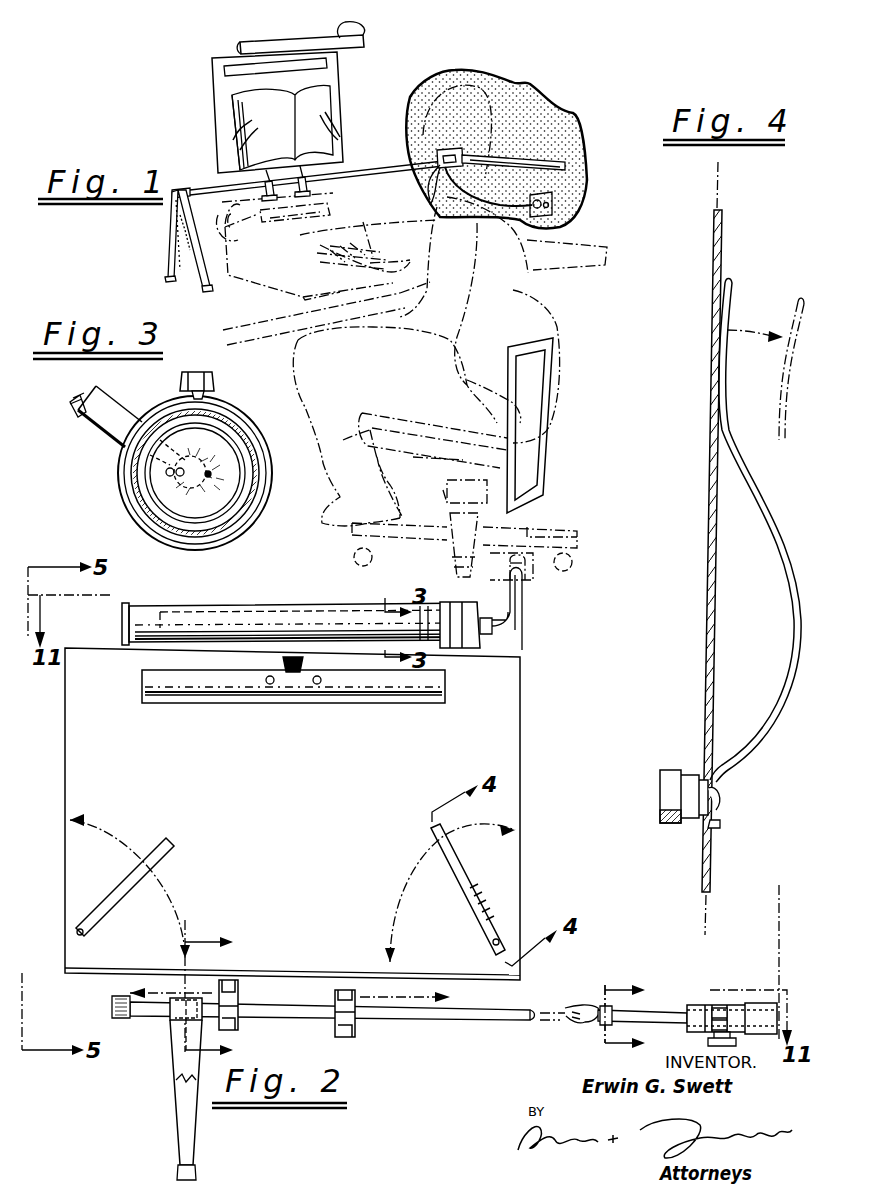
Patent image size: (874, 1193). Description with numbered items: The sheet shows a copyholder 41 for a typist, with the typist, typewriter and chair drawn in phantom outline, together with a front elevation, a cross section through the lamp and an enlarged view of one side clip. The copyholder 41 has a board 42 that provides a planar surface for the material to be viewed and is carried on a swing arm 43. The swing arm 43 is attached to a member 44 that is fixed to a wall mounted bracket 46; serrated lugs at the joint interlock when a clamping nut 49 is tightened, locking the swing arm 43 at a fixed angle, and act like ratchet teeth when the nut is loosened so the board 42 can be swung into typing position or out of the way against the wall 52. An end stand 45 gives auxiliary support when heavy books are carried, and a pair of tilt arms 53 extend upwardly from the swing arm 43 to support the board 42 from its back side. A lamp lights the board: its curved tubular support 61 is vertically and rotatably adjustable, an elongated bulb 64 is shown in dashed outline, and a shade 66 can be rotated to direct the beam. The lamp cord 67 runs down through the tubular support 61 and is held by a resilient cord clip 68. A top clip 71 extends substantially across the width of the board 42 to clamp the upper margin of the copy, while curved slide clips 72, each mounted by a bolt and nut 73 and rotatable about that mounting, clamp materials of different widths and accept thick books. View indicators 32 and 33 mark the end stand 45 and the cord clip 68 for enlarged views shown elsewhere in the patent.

In FIG. 1, the copyholder 41 is at (203, 80).
In FIG. 1, the board 42 is at (338, 75).
In FIG. 2, the board 42 is at (512, 707).
In FIG. 4, the board 42 is at (706, 633).
In FIG. 1, the swing arm 43 is at (335, 172).
In FIG. 2, the swing arm 43 is at (590, 1040).
In FIG. 1, the member 44 is at (462, 158).
In FIG. 2, the member 44 is at (740, 1012).
In FIG. 1, the end stand 45 is at (183, 218).
In FIG. 2, the end stand 45 is at (174, 1103).
In FIG. 1, the wall mounted bracket 46 is at (548, 160).
In FIG. 2, the clamping nut 49 is at (736, 1044).
In FIG. 1, the wall 52 is at (478, 82).
In FIG. 2, the tilt arms 53 is at (242, 984).
In FIG. 3, the curved tubular support 61 is at (108, 439).
In FIG. 2, the curved tubular support 61 is at (523, 651).
In FIG. 3, the elongated bulb 64 is at (148, 479).
In FIG. 2, the elongated bulb 64 is at (255, 616).
In FIG. 3, the shade 66 is at (240, 423).
In FIG. 1, the cord 67 is at (415, 175).
In FIG. 3, the cord 67 is at (78, 409).
In FIG. 1, the resilient cord clip 68 is at (468, 192).
In FIG. 2, the top clip 71 is at (150, 680).
In FIG. 2, the slide clips 72 is at (164, 840).
In FIG. 4, the slide clips 72 is at (795, 599).
In FIG. 4, the bolt and nut 73 is at (688, 792).
In FIG. 2, the section line 32 is at (219, 996).
In FIG. 2, the section line 33 is at (642, 1017).